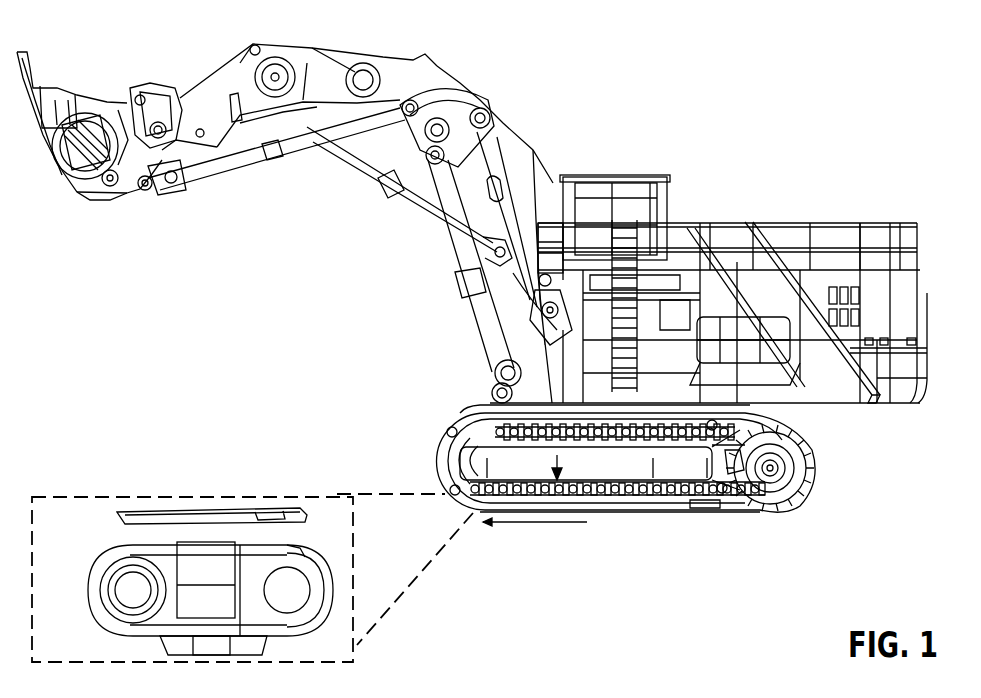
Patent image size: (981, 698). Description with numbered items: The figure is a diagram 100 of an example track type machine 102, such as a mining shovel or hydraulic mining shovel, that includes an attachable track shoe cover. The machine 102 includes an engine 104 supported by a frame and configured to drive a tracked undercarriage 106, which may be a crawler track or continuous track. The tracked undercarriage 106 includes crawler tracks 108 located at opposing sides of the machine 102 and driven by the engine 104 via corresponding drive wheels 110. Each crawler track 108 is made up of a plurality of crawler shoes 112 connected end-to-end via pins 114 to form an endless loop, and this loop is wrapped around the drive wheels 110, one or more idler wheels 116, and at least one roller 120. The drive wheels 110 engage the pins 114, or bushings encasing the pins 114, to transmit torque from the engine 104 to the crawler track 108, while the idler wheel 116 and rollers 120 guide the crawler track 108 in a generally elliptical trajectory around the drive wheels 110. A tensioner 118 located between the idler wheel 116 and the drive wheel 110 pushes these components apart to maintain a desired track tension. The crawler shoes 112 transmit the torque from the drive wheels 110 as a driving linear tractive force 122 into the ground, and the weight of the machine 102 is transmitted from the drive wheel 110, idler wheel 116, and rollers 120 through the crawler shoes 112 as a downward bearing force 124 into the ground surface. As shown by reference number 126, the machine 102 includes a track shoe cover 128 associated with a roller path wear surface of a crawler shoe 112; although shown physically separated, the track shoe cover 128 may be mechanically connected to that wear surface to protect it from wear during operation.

The diagram 100 is at (90, 21).
The track type machine 102 is at (633, 78).
The engine 104 is at (822, 275).
The tracked undercarriage 106 is at (357, 468).
The crawler track 108 is at (800, 438).
The drive wheel 110 is at (810, 462).
The crawler shoe 112 is at (610, 508).
The pin 114 is at (693, 508).
The idler wheel 116 is at (445, 440).
The tensioner 118 is at (488, 420).
The roller 120 is at (712, 425).
The driving linear (tractive) force 122 is at (528, 523).
The downward bearing force 124 is at (563, 466).
The reference number 126 is at (70, 497).
The track shoe cover 128 is at (160, 510).